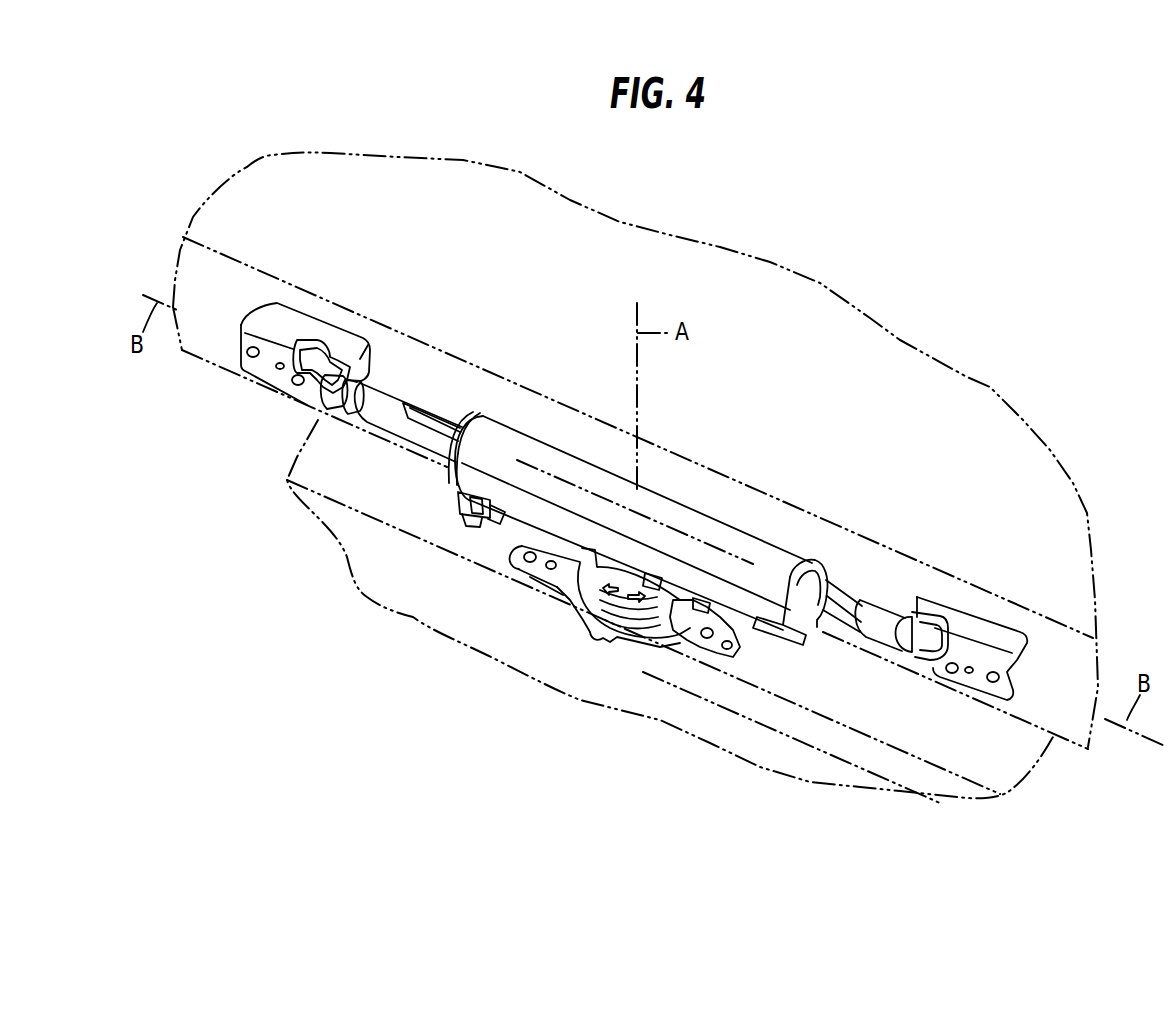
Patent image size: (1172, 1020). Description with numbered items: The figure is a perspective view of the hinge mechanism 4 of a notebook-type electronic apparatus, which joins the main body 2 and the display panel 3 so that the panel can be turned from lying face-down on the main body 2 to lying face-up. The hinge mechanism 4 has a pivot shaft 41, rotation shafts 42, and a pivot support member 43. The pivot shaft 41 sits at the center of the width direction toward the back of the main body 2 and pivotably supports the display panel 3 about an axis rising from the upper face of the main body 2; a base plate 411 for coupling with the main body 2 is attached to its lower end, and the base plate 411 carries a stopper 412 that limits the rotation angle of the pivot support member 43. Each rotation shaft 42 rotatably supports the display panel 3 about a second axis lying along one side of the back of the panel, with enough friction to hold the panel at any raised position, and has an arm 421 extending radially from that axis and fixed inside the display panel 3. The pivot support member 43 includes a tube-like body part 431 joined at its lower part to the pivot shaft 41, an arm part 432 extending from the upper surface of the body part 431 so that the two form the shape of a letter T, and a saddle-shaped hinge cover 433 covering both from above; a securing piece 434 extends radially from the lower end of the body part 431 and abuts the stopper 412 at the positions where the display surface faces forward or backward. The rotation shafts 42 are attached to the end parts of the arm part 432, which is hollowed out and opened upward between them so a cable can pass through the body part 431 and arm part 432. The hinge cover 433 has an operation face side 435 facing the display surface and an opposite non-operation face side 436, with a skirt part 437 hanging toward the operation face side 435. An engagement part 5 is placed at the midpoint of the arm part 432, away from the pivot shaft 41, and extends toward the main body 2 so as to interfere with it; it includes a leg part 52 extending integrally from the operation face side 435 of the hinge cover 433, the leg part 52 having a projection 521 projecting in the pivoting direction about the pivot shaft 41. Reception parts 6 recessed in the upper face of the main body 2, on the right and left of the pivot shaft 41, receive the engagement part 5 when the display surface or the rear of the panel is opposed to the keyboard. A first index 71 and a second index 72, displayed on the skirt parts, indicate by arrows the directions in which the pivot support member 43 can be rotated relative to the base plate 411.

The main body 2 is at (1016, 768).
The display panel 3 is at (958, 395).
The hinge mechanism 4 is at (830, 340).
The pivot shaft 41 is at (610, 637).
The base plate 411 is at (523, 563).
The stopper 412 is at (712, 620).
The rotation shaft 42 is at (332, 383).
The arm 421 is at (290, 317).
The pivot support member 43 is at (703, 492).
The body part 431 is at (653, 587).
The arm part 432 is at (398, 397).
The hinge cover 433 is at (755, 540).
The securing piece 434 is at (693, 610).
The operation face side 435 is at (765, 615).
The non-operation face side 436 is at (641, 495).
The skirt part 437 is at (583, 575).
The engagement part 5 is at (452, 504).
The leg part 52 is at (475, 493).
The projection 521 is at (468, 515).
The reception part 6 is at (455, 488).
The first index 71 is at (607, 592).
The second index 72 is at (632, 597).